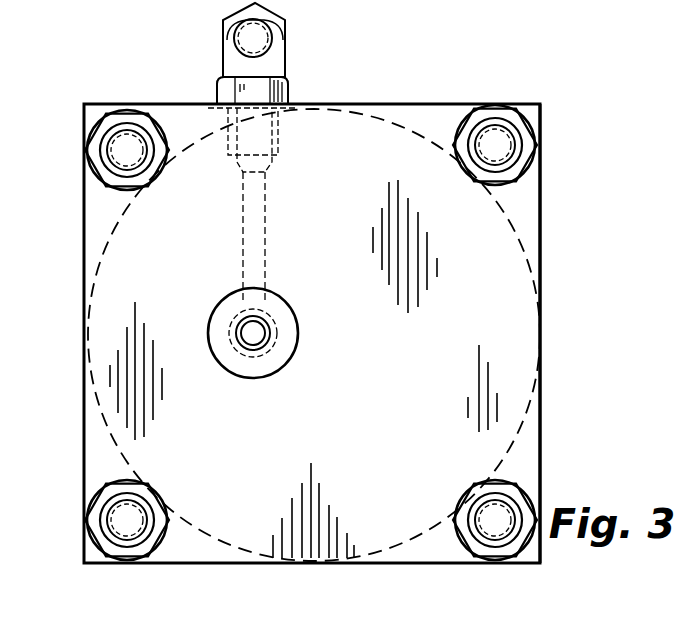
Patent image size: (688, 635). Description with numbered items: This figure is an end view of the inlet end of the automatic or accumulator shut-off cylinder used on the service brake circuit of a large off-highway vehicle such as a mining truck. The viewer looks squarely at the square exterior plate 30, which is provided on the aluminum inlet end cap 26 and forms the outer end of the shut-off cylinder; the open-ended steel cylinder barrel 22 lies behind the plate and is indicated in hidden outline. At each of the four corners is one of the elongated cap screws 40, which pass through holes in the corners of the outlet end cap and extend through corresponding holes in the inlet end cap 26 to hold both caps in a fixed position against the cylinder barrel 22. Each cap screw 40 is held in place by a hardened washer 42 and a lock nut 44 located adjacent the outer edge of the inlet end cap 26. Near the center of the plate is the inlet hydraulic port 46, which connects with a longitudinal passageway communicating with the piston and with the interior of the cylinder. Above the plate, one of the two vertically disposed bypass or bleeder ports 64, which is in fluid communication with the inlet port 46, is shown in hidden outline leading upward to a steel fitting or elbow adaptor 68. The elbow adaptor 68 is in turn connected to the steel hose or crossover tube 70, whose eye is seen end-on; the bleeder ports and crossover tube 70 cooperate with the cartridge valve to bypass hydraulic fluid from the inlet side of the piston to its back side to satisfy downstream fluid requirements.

The cylinder barrel 22 is at (515, 228).
The inlet end cap 26 is at (525, 195).
The square exterior plate 30 is at (518, 362).
The cap screw 40 is at (500, 138).
The hardened washer 42 is at (512, 118).
The lock nut 44 is at (99, 177).
The inlet hydraulic port 46 is at (263, 333).
The bleeder port 64 is at (253, 222).
The elbow adaptor 68 is at (262, 68).
The crossover tube 70 is at (273, 30).